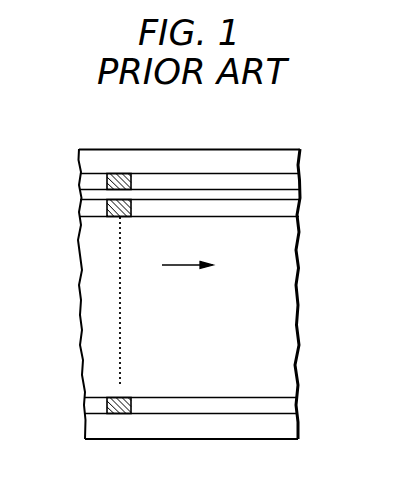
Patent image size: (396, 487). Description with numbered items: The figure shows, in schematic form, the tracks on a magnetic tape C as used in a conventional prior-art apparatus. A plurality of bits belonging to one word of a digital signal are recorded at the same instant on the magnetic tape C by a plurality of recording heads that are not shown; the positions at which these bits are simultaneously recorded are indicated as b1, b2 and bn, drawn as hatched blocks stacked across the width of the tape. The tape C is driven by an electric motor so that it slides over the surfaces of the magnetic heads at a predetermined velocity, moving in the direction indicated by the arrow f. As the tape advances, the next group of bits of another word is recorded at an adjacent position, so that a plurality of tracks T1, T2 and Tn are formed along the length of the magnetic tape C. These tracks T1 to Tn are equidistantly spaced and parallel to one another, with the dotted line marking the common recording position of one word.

The magnetic tape C is at (242, 149).
The track T1 is at (290, 180).
The track T2 is at (290, 209).
The track Tn is at (288, 406).
The bit recording position b1 is at (117, 173).
The bit recording position b2 is at (117, 216).
The bit recording position bn is at (117, 414).
The tape moving direction f is at (183, 266).